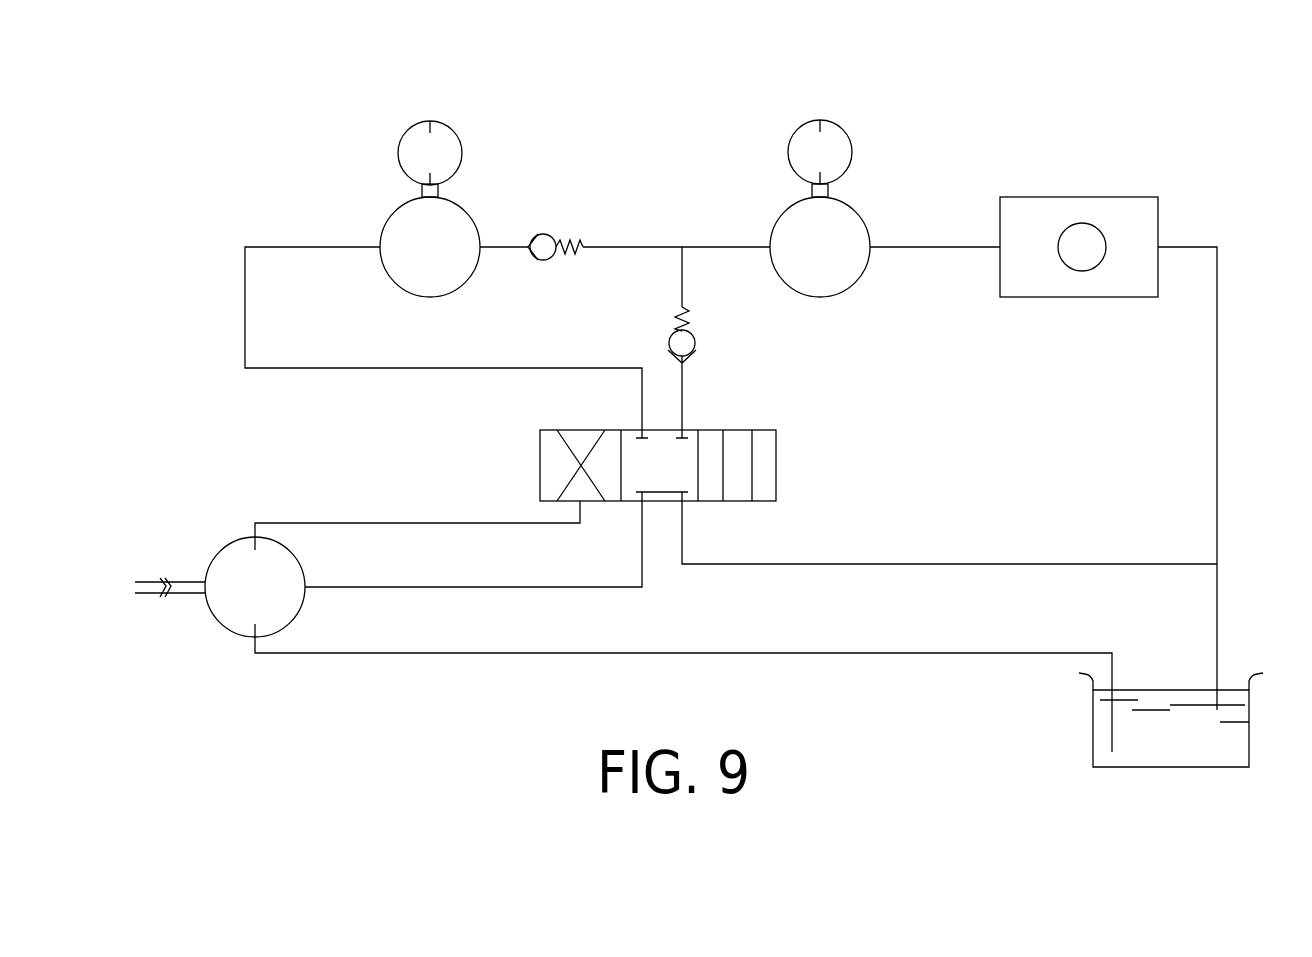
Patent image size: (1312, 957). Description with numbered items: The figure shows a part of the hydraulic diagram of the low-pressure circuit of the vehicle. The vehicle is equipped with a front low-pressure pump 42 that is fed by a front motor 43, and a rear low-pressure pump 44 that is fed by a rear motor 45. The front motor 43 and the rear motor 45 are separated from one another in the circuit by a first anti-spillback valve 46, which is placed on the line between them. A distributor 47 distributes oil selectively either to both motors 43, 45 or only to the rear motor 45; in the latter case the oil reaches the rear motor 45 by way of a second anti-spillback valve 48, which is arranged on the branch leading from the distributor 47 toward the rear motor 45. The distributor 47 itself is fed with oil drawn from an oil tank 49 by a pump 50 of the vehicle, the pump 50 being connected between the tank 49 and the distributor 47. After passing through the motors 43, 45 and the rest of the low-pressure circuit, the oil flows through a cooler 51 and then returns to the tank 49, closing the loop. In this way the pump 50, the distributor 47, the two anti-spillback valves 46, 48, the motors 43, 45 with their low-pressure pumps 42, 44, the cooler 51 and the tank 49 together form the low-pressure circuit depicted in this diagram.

The front low-pressure pump 42 is at (443, 148).
The front motor 43 is at (458, 223).
The rear low-pressure pump 44 is at (835, 152).
The rear motor 45 is at (842, 235).
The first anti-spillback valve 46 is at (545, 243).
The distributor 47 is at (707, 462).
The second anti-spillback valve 48 is at (677, 318).
The oil tank 49 is at (1133, 730).
The pump 50 is at (240, 575).
The cooler 51 is at (1105, 215).